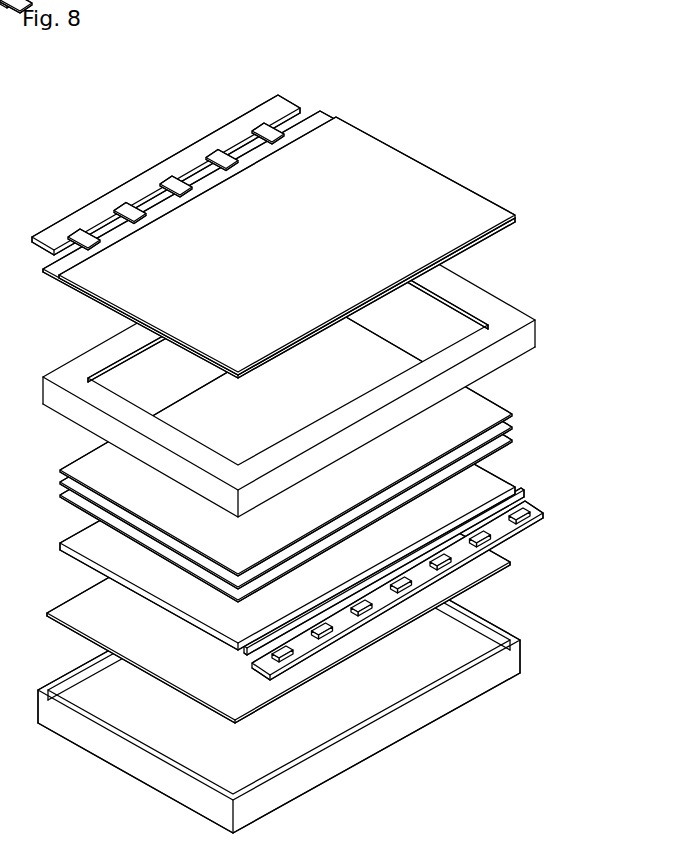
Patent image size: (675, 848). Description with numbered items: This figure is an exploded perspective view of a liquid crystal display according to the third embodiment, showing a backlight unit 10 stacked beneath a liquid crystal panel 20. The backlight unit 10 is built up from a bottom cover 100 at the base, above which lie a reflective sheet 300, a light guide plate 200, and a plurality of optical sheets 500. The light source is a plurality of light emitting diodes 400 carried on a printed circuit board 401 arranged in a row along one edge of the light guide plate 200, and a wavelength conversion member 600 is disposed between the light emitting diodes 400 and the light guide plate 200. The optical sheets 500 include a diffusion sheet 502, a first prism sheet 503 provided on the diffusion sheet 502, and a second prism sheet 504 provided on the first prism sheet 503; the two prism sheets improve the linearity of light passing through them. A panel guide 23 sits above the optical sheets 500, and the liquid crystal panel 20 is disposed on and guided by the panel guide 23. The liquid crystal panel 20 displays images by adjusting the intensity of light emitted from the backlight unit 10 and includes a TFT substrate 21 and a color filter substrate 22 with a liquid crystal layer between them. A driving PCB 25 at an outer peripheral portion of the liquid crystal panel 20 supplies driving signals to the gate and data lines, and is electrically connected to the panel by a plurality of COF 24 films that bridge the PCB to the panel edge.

The backlight unit 10 is at (325, 416).
The liquid crystal panel 20 is at (279, 210).
The TFT substrate 21 is at (319, 107).
The color filter substrate 22 is at (360, 128).
The panel guide 23 is at (537, 334).
The COF (chip on film) 24 is at (262, 128).
The driving PCB 25 is at (52, 229).
The bottom cover 100 is at (515, 657).
The light guide plate 200 is at (498, 482).
The reflective sheet 300 is at (497, 560).
The light emitting diodes 400 is at (294, 340).
The printed circuit board 401 is at (530, 508).
The optical sheets 500 is at (337, 456).
The diffusion sheet 502 is at (512, 440).
The first prism sheet 503 is at (512, 427).
The second prism sheet 504 is at (512, 413).
The wavelength conversion member 600 is at (245, 652).